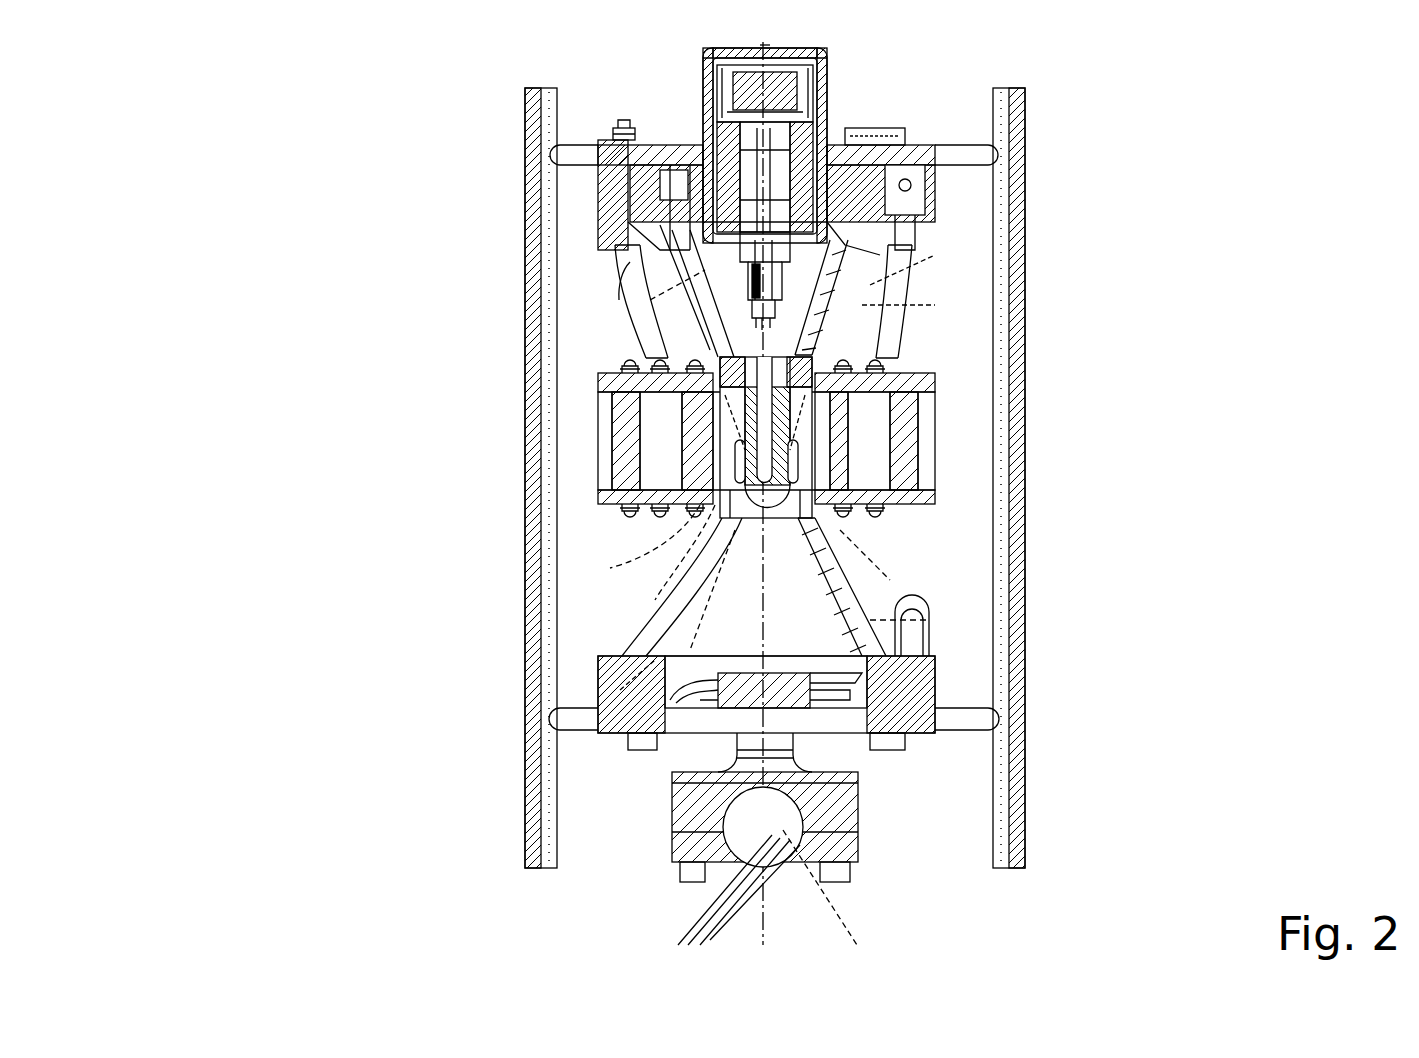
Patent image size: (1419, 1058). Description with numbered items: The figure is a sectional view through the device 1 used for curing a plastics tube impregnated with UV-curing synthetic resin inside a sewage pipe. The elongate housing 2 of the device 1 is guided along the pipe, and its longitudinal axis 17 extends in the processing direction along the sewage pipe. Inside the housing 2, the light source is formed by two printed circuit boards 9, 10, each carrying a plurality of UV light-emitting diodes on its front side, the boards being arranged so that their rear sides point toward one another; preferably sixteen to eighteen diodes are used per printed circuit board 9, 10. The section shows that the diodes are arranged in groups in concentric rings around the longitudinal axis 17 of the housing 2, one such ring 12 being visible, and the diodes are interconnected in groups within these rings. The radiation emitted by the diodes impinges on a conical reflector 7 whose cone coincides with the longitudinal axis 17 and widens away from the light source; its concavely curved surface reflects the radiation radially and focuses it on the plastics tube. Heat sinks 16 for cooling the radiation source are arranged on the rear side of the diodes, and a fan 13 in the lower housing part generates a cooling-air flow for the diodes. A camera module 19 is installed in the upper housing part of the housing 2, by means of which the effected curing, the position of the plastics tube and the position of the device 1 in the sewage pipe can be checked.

The device 1 is at (196, 134).
The housing 2 is at (597, 193).
The reflector 7 is at (858, 305).
The printed circuit board 9 is at (820, 385).
The printed circuit board 10 is at (690, 495).
The concentric ring 12 is at (847, 367).
The fan 13 is at (840, 690).
The heat sinks 16 is at (830, 440).
The longitudinal axis 17 is at (752, 598).
The camera module 19 is at (748, 138).